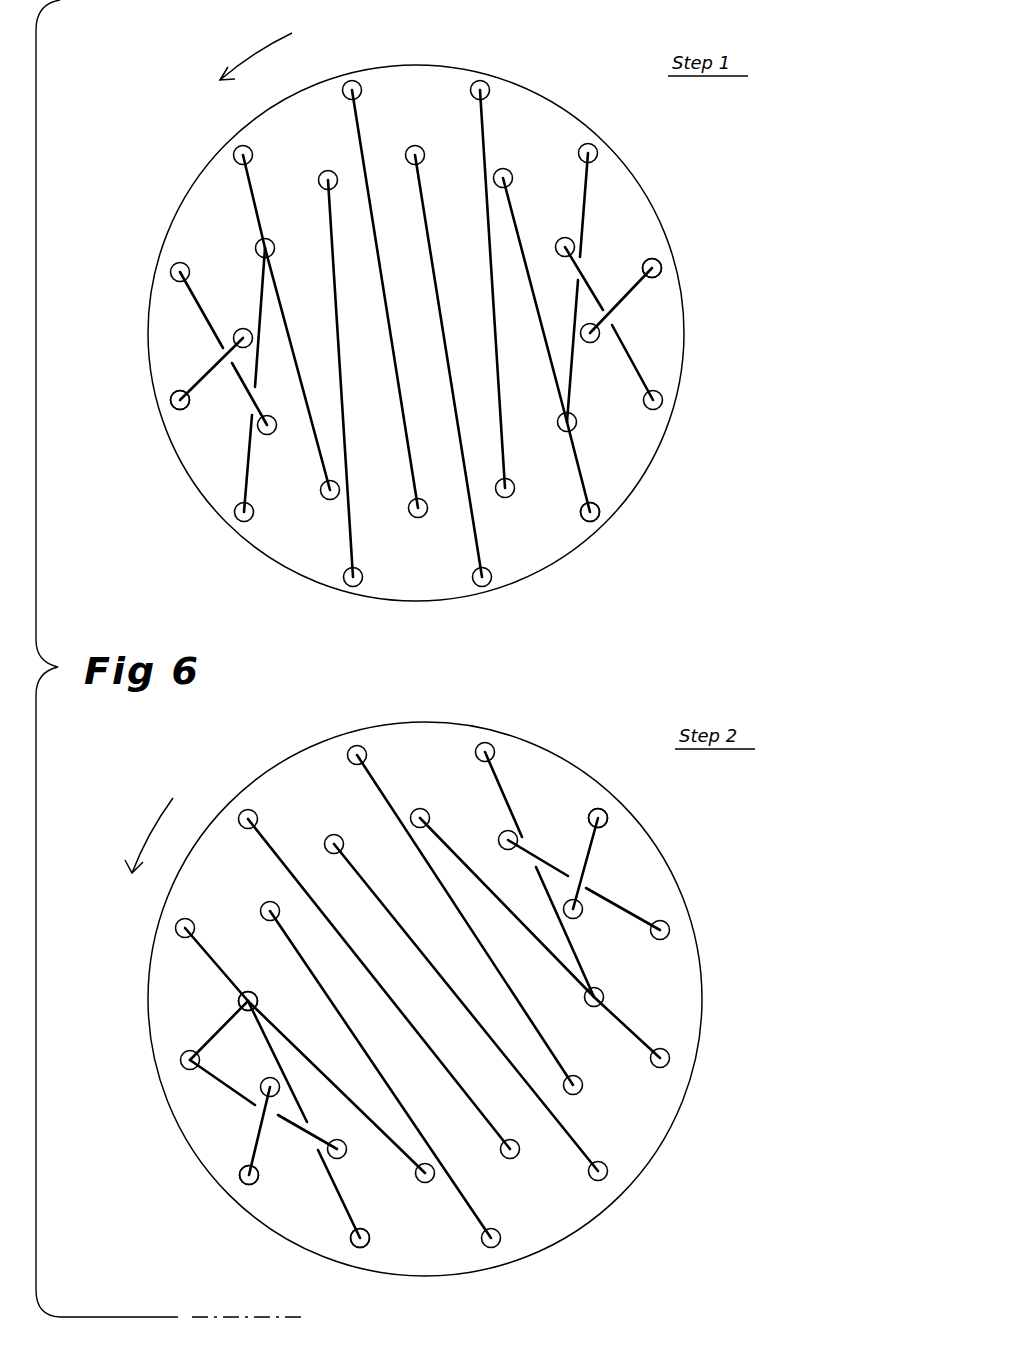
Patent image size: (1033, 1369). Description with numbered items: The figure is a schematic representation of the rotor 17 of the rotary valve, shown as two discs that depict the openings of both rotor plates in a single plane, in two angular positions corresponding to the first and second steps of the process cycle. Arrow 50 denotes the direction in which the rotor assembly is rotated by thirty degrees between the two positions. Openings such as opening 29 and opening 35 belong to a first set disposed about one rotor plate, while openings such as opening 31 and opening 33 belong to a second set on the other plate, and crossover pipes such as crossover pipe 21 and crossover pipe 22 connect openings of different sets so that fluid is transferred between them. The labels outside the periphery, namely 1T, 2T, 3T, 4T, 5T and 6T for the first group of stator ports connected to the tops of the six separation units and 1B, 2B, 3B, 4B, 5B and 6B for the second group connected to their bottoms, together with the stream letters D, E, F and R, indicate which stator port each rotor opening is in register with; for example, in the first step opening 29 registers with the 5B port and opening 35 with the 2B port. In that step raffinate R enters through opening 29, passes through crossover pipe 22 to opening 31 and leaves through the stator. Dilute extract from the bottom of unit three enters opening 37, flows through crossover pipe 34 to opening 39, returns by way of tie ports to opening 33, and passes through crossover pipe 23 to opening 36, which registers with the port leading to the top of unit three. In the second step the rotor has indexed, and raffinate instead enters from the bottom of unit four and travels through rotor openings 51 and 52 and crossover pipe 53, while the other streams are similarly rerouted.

The rotor 17 is at (486, 670).
The arrow 50 is at (199, 445).
The crossover pipe 21 is at (606, 588).
The crossover pipe 22 is at (216, 756).
The crossover pipe 23 is at (593, 588).
The opening 29 is at (239, 788).
The opening 31 is at (255, 672).
The opening 33 is at (518, 533).
The crossover pipe 34 is at (567, 345).
The opening 35 is at (599, 529).
The opening 36 is at (603, 692).
The opening 37 is at (570, 506).
The opening 39 is at (520, 163).
The rotor opening 51 is at (382, 1229).
The rotor opening 52 is at (268, 986).
The crossover pipe 53 is at (323, 1119).
The port label 1T is at (377, 399).
The port label 1B is at (506, 401).
The port label 2T is at (618, 465).
The port label 2B is at (684, 599).
The port label 3T is at (688, 721).
The port label 3B is at (607, 848).
The port label 4T is at (512, 909).
The port label 4B is at (332, 910).
The port label 5T is at (237, 831).
The port label 5B is at (156, 724).
The port label 6T is at (151, 600).
The port label 6B is at (214, 468).
The desorbent stream label D is at (432, 472).
The extract stream label E is at (614, 670).
The feed stream label F is at (419, 858).
The raffinate stream label R is at (232, 670).